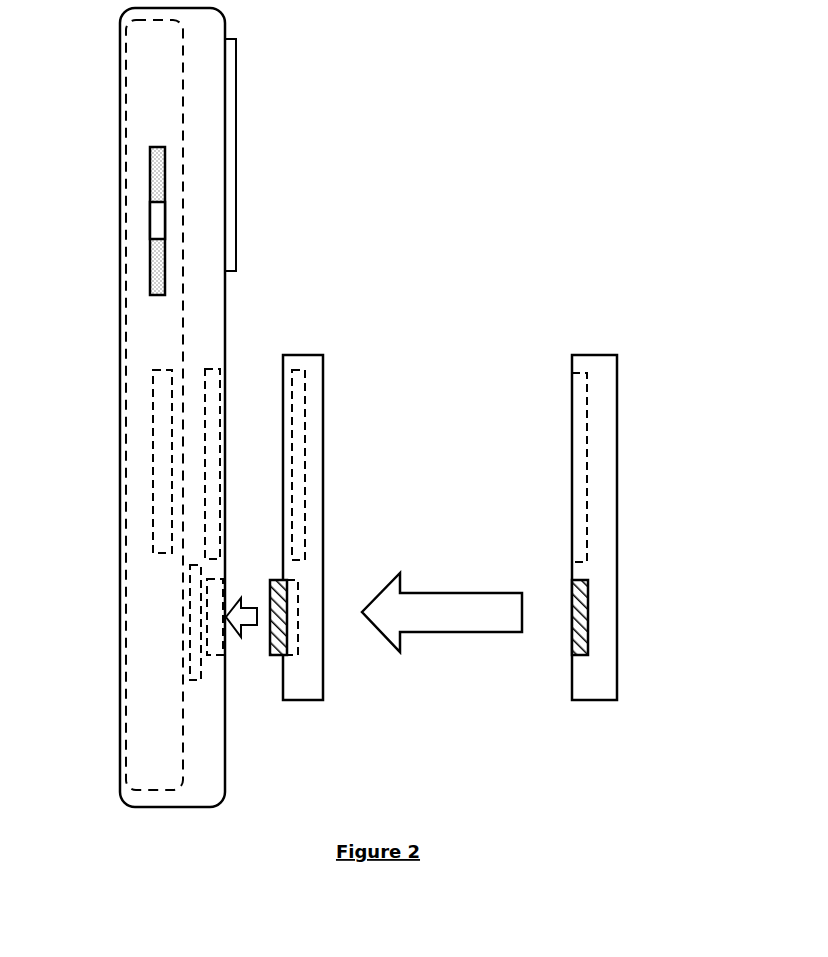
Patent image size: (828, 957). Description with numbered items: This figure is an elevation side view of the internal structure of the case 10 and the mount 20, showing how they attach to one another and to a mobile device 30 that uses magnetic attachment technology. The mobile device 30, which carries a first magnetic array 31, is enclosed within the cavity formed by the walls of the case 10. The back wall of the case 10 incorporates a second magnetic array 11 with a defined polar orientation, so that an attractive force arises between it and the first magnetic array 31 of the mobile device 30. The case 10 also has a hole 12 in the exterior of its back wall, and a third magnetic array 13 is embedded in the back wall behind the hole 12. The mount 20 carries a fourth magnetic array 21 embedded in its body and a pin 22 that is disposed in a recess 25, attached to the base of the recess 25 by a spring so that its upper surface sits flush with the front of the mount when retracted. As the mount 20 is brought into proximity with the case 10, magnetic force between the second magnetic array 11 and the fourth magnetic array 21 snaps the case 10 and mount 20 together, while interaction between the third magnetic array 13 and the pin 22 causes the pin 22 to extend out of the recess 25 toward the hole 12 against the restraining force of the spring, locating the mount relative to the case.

The case 10 is at (247, 227).
The second magnetic array 11 is at (213, 393).
The hole 12 is at (217, 642).
The third magnetic array 13 is at (197, 668).
The mount 20 is at (325, 395).
The fourth magnetic array 21 is at (298, 393).
The pin 22 is at (283, 652).
The recess 25 is at (288, 600).
The mobile device 30 is at (147, 90).
The first magnetic array 31 is at (165, 438).